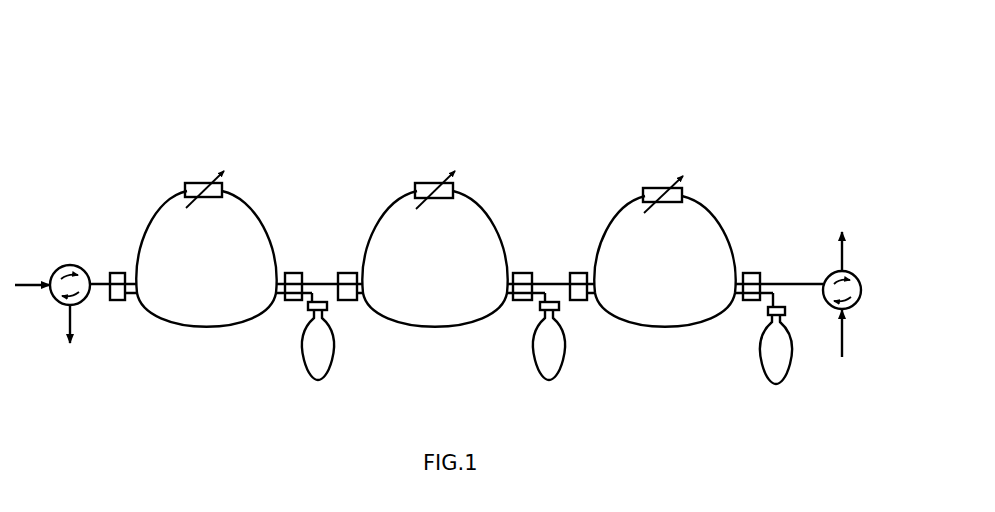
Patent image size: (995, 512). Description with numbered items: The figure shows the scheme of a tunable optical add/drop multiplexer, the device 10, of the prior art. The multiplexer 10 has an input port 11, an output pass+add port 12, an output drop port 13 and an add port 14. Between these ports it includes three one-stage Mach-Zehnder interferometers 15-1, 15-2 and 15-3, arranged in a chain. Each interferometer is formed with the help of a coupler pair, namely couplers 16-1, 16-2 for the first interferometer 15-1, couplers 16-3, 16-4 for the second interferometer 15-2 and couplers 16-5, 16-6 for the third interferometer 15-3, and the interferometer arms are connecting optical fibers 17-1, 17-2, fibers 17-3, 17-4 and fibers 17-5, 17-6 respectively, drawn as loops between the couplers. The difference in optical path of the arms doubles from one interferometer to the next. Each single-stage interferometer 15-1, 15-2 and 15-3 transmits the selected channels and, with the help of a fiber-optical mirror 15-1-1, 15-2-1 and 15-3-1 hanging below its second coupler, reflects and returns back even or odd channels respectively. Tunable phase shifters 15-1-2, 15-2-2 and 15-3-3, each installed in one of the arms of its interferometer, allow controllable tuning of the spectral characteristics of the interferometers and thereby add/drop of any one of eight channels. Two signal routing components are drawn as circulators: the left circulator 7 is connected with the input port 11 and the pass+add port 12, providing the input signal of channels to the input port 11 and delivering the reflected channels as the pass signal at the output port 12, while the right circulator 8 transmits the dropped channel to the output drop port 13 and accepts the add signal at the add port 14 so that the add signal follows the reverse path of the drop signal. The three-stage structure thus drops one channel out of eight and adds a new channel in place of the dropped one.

The multiplexer device 10 is at (84, 62).
The input optical circulator 7 is at (73, 265).
The output optical circulator 8 is at (828, 277).
The input port 11 is at (45, 288).
The output pass+add port 12 is at (75, 318).
The output drop port 13 is at (866, 262).
The add port 14 is at (845, 338).
The first one-stage MZI 15-1 is at (219, 241).
The second one-stage MZI 15-2 is at (456, 243).
The third one-stage MZI 15-3 is at (688, 245).
The fiber-optical mirror 15-1-1 is at (310, 352).
The fiber-optical mirror 15-2-1 is at (544, 352).
The fiber-optical mirror 15-3-1 is at (768, 354).
The tunable phase shifter 15-1-2 is at (226, 183).
The tunable phase shifter 15-2-2 is at (455, 188).
The third variable optical element 15-3-3 is at (683, 192).
The coupler 16-1 is at (118, 273).
The coupler 16-2 is at (292, 273).
The coupler 16-3 is at (344, 273).
The coupler 16-4 is at (530, 263).
The coupler 16-5 is at (576, 273).
The coupler 16-6 is at (750, 275).
The connecting optical fiber 17-1 is at (152, 225).
The connecting optical fiber 17-2 is at (190, 325).
The connecting optical fiber 17-3 is at (388, 220).
The connecting optical fiber 17-4 is at (440, 325).
The connecting optical fiber 17-5 is at (620, 222).
The connecting optical fiber 17-6 is at (672, 325).